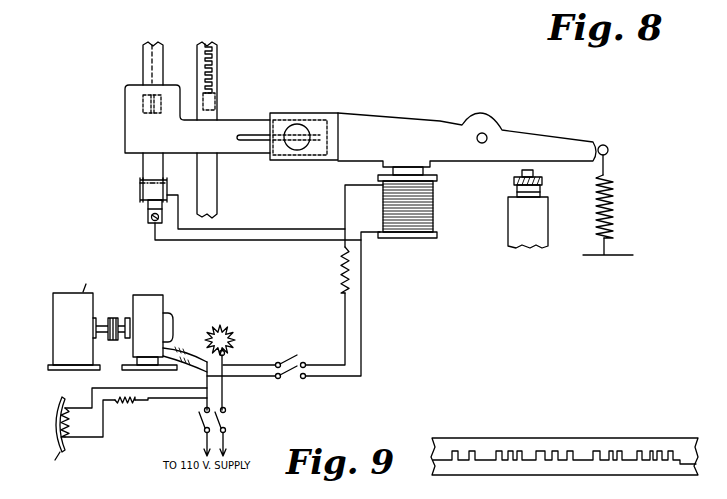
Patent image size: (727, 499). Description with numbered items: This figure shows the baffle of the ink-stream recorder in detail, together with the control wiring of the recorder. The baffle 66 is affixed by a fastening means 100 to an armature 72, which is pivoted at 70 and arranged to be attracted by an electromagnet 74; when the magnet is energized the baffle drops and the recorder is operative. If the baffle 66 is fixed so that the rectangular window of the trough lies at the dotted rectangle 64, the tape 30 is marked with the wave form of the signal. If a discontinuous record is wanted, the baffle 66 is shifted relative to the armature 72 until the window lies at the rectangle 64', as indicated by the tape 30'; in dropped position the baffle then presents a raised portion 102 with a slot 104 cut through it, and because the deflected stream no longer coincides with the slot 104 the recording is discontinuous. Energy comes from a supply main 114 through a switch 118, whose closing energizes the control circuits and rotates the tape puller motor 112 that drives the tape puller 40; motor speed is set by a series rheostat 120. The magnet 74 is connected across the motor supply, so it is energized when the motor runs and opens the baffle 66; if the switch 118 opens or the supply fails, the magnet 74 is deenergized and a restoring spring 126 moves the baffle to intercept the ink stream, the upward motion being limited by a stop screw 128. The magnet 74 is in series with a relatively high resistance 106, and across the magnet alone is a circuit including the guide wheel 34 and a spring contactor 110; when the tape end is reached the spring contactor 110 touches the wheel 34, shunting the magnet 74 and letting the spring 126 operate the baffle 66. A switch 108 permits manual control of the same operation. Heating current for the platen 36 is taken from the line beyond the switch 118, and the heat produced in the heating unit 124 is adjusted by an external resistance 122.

The tape 30' is at (164, 102).
The tape 30 is at (220, 124).
The rectangular opening 64 is at (222, 92).
The rectangular window 64' is at (167, 88).
The slot 104 is at (143, 103).
The raised portion 102 is at (125, 90).
The baffle plate 66 is at (240, 118).
The fastening means 100 is at (300, 125).
The armature 72 is at (432, 120).
The pivot 70 is at (487, 134).
The electromagnet 74 is at (436, 222).
The stop screw 128 is at (543, 185).
The restoring spring 126 is at (614, 200).
The guide wheel 34 is at (138, 190).
The spring contactor 110 is at (148, 226).
The high resistance 106 is at (342, 270).
The switch 108 is at (295, 377).
The tape puller 40 is at (53, 311).
The tape puller motor 112 is at (165, 304).
The series rheostat 120 is at (232, 340).
The switch 118 is at (226, 424).
The supply main 114 is at (218, 438).
The platen 36 is at (56, 411).
The heating unit 124 is at (70, 406).
The external resistance 122 is at (118, 403).